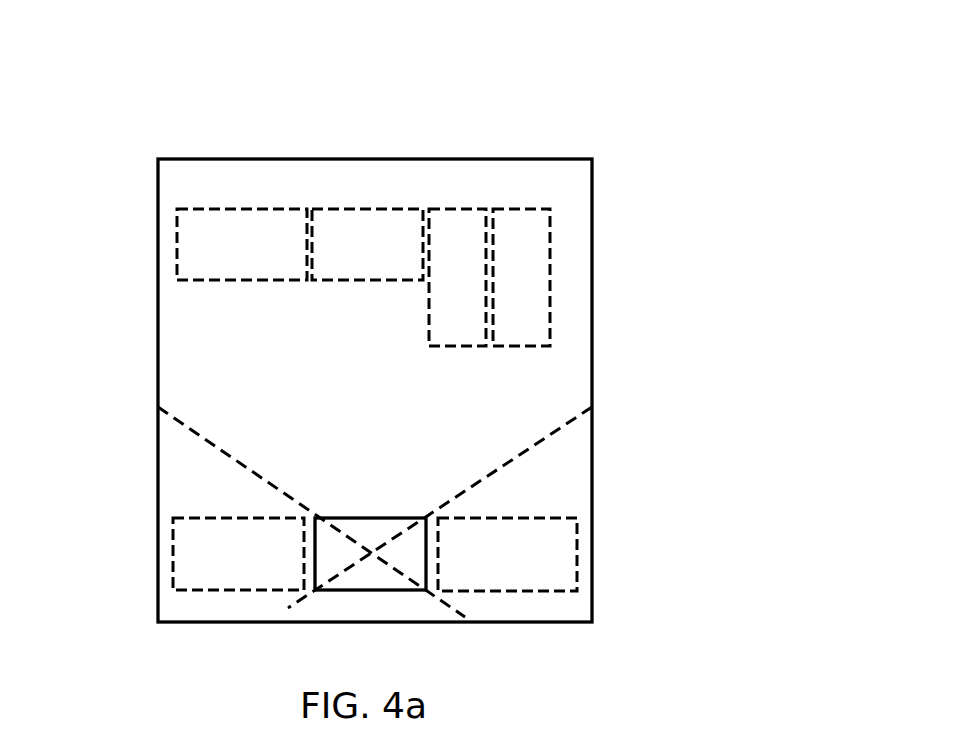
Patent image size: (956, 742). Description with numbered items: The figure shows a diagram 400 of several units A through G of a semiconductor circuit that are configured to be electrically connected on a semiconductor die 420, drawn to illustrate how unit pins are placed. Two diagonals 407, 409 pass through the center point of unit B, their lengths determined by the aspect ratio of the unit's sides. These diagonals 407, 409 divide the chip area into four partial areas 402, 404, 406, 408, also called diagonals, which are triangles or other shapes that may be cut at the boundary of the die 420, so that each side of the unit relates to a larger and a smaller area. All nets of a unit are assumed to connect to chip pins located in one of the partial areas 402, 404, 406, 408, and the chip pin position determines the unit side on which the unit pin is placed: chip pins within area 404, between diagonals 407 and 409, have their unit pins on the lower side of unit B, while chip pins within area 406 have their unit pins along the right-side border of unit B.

The diagram 400 is at (178, 118).
The semiconductor die 420 is at (528, 156).
The partial area 408 is at (221, 342).
The partial area 402 is at (200, 488).
The partial area 404 is at (351, 603).
The partial area 406 is at (576, 460).
The diagonal 407 is at (277, 485).
The diagonal 409 is at (502, 461).